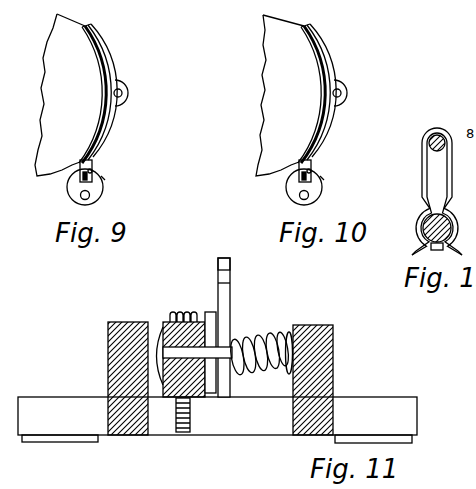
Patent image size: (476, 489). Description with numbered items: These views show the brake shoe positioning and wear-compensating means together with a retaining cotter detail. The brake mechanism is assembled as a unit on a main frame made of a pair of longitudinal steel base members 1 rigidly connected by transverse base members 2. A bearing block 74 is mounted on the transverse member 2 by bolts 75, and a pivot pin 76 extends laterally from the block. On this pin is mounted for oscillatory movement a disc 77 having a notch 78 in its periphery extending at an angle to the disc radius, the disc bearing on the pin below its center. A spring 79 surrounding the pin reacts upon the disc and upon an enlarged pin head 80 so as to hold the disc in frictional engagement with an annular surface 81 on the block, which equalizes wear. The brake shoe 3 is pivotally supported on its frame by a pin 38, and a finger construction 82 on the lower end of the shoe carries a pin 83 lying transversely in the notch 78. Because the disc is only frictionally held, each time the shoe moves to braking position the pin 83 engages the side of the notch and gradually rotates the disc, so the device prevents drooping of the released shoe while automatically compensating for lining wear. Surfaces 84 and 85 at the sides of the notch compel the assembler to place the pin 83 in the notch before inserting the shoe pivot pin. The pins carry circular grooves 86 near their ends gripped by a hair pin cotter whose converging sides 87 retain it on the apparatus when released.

In FIG. 11, the longitudinal base member 1 is at (106, 377).
In FIG. 11, the transverse base member 2 is at (368, 404).
In FIG. 9, the brake shoe 3 is at (118, 61).
In FIG. 10, the brake shoe 3 is at (326, 93).
In FIG. 9, the pin 38 is at (125, 93).
In FIG. 10, the pin 38 is at (357, 93).
In FIG. 11, the bearing block 74 is at (163, 323).
In FIG. 11, the bolts 75 is at (181, 312).
In FIG. 11, the pivot pin 76 is at (256, 364).
In FIG. 9, the disc 77 is at (98, 190).
In FIG. 10, the disc 77 is at (324, 193).
In FIG. 11, the disc 77 is at (231, 291).
In FIG. 9, the notch 78 is at (68, 188).
In FIG. 10, the notch 78 is at (288, 187).
In FIG. 11, the notch 78 is at (231, 272).
In FIG. 11, the spring 79 is at (247, 337).
In FIG. 11, the enlarged pin head 80 is at (288, 332).
In FIG. 11, the annular surface 81 is at (211, 311).
In FIG. 9, the finger construction 82 is at (91, 164).
In FIG. 10, the finger construction 82 is at (318, 165).
In FIG. 9, the pin 83 is at (93, 171).
In FIG. 10, the pin 83 is at (328, 172).
In FIG. 9, the surface 84 is at (72, 163).
In FIG. 10, the surface 84 is at (290, 95).
In FIG. 9, the surface 85 is at (105, 180).
In FIG. 10, the surface 85 is at (343, 181).
In FIG. 15, the circular groove 86 is at (420, 262).
In FIG. 15, the converging sides 87 is at (442, 186).